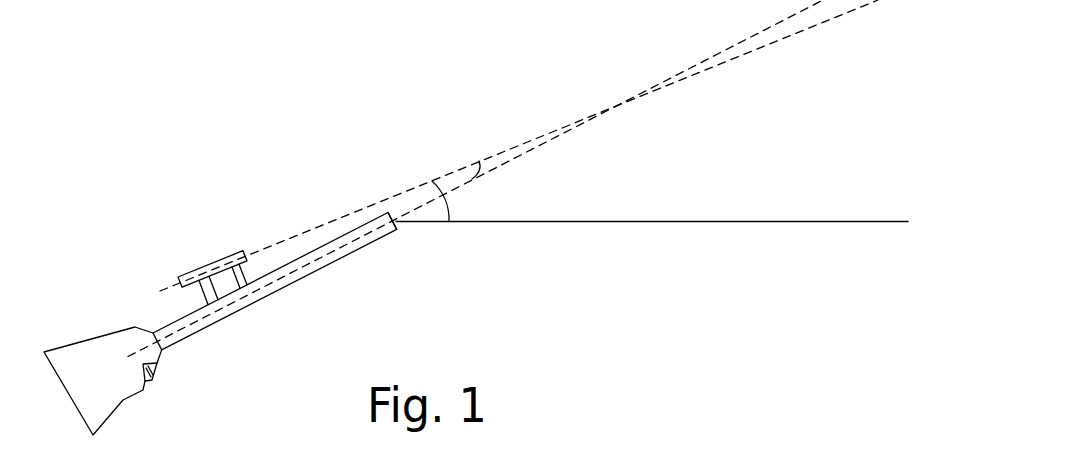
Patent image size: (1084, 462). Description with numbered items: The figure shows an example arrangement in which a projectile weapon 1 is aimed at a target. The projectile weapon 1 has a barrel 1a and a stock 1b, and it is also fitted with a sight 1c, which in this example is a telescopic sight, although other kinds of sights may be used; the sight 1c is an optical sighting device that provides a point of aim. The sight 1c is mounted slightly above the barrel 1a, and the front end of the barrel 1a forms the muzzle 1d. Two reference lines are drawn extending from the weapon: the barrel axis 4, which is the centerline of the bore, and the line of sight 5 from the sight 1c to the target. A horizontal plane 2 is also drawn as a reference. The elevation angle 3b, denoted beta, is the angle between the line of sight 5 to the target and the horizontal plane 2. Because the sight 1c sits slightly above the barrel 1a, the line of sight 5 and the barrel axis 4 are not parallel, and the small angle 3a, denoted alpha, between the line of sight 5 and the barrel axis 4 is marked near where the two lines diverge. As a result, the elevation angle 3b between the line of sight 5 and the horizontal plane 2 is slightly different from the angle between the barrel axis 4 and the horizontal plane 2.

The projectile weapon 1 is at (234, 316).
The barrel of the projectile weapon 1a is at (257, 307).
The stock of the projectile weapon 1b is at (77, 338).
The sight 1c is at (228, 257).
The muzzle 1d is at (403, 233).
The horizontal plane 2 is at (707, 222).
The angle α between a line of sight to the target and a barrel axis of the projectil 3a is at (478, 161).
The elevation angle β between a line of sight to the target and a horizontal plane 3b is at (470, 207).
The barrel axis of the projectile weapon 4 is at (512, 160).
The line of sight 5 is at (307, 230).